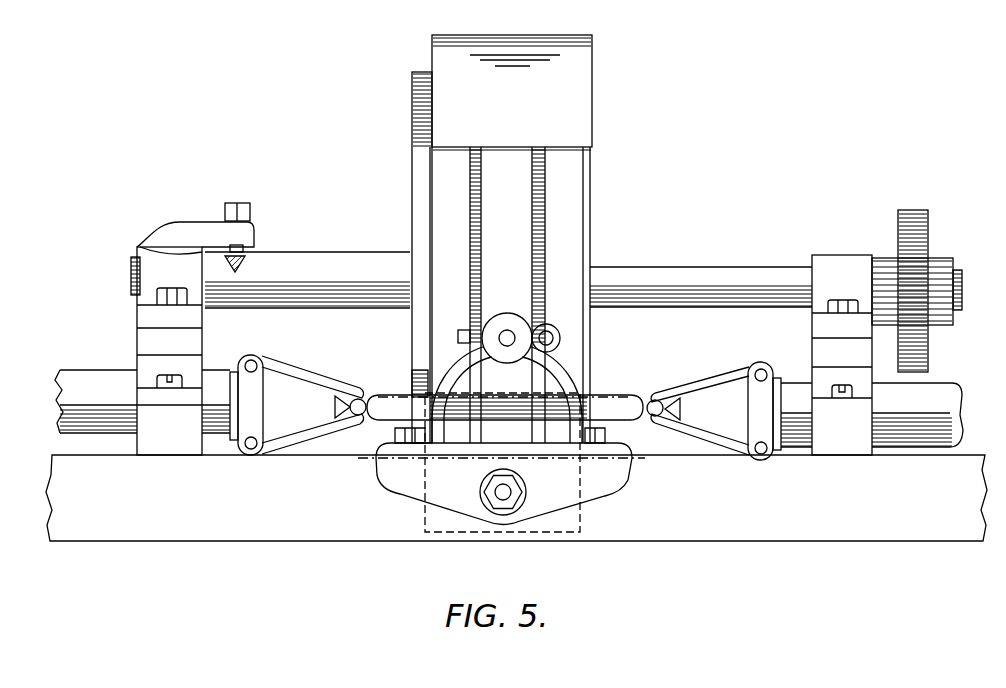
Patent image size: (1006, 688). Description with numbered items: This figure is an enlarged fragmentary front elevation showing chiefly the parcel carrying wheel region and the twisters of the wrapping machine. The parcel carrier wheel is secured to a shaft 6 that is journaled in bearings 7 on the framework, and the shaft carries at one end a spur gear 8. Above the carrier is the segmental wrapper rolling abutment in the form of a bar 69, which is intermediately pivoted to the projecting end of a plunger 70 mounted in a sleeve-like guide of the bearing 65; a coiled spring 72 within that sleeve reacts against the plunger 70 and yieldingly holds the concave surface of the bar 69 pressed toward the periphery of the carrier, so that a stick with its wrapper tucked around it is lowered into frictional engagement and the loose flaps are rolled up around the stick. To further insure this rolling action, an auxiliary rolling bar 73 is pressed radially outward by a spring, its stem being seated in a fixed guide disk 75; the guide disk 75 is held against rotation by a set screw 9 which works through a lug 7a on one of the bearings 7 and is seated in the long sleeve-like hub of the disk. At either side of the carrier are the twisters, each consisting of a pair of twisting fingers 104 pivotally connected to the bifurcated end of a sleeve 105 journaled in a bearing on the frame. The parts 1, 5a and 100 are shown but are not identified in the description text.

The base 1 is at (673, 527).
The shaft 6 is at (573, 107).
The bearings 7 is at (143, 252).
The lug 7a is at (198, 226).
The spur gear 8 is at (918, 240).
The set screw 9 is at (240, 212).
The shaft 5a is at (318, 262).
The bearing 65 is at (456, 362).
The wrapper rolling abutment bar 69 is at (568, 253).
The plunger 70 is at (514, 341).
The coiled spring 72 is at (518, 324).
The auxiliary rolling bar 73 is at (430, 392).
The guide disk 75 is at (425, 148).
The lower bracket 100 is at (148, 368).
The twisting fingers 104 is at (290, 440).
The sleeve 105 is at (46, 369).